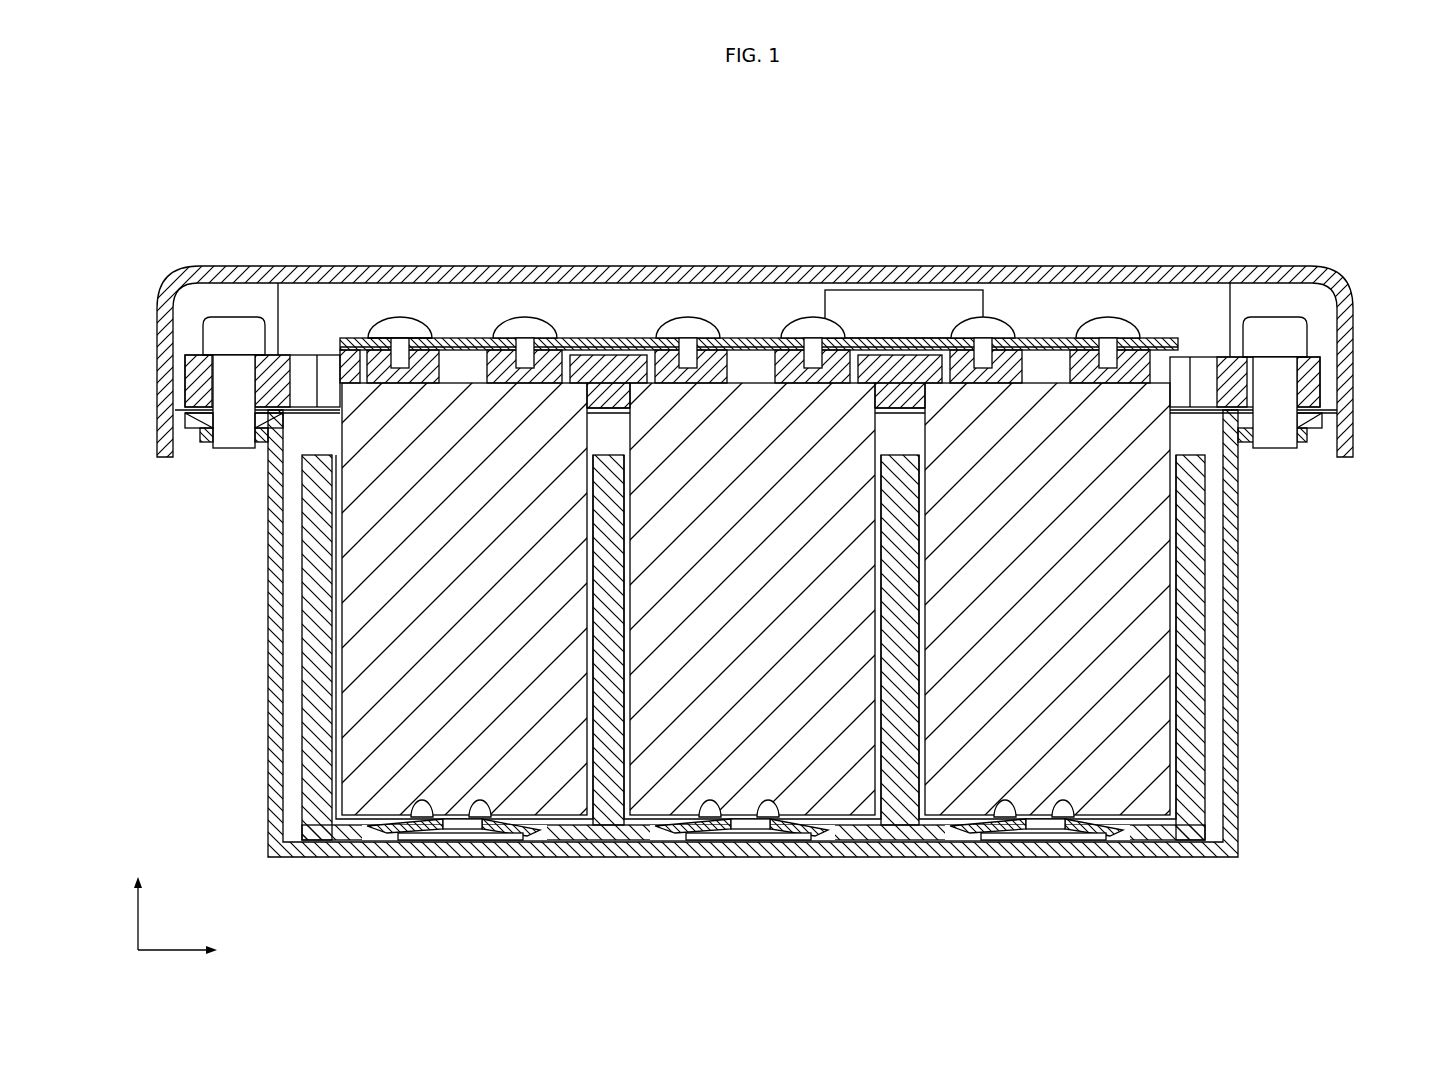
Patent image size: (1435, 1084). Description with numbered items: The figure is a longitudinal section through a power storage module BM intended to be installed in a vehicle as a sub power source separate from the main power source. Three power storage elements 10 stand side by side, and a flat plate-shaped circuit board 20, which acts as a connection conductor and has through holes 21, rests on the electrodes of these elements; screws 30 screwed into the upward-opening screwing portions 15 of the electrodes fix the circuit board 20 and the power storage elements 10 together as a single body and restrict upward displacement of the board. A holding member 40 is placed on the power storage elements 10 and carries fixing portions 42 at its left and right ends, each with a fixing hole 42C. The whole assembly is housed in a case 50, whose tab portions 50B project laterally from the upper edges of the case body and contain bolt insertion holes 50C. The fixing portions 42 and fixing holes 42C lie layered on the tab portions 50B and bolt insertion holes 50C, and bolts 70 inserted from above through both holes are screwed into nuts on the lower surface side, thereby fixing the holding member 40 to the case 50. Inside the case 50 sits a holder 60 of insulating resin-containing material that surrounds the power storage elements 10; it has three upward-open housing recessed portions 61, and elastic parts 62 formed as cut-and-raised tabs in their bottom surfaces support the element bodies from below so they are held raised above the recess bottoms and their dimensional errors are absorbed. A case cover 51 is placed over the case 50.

The power storage module BM is at (1047, 143).
The power storage element 10 is at (463, 376).
The screwing portion 15 is at (395, 352).
The circuit board 20 is at (597, 337).
The through hole 21 is at (418, 337).
The screw 30 is at (391, 319).
The holding member 40 is at (612, 352).
The fixing portion 42 is at (767, 309).
The fixing hole 42C is at (1294, 372).
The case 50 is at (1240, 603).
The tab portion 50B is at (1318, 432).
The bolt insertion hole 50C is at (1296, 424).
The case cover 51 is at (1354, 384).
The holder 60 is at (302, 792).
The housing recessed portion 61 is at (332, 765).
The elastic part 62 is at (480, 805).
The bolt 70 is at (1274, 317).